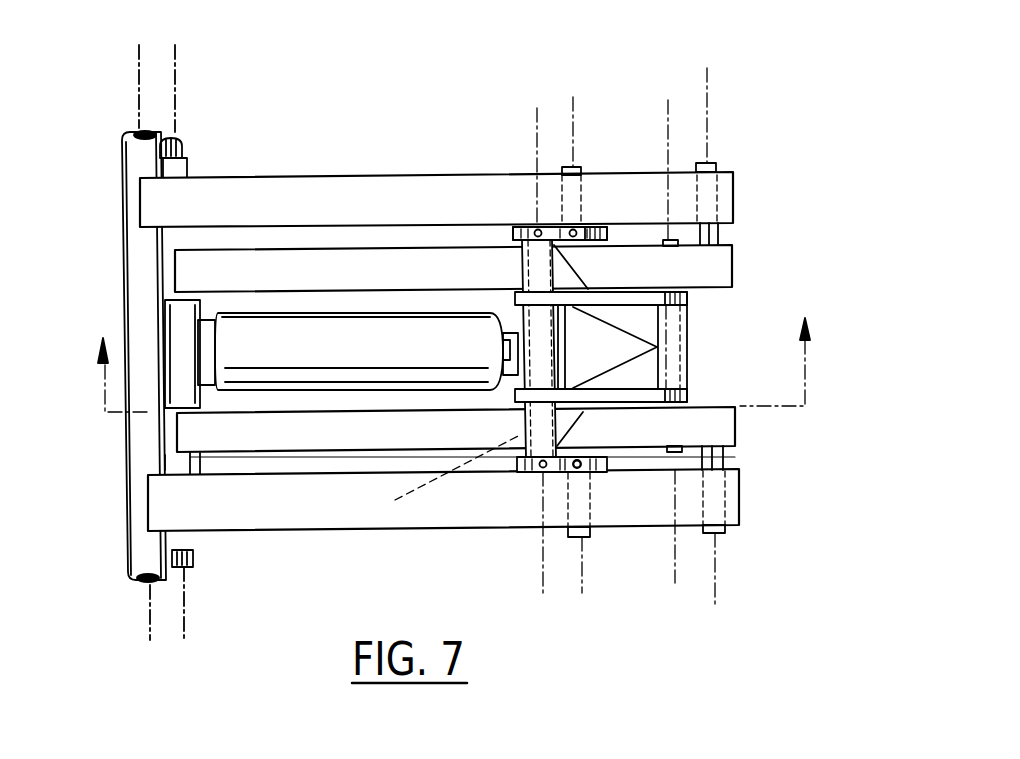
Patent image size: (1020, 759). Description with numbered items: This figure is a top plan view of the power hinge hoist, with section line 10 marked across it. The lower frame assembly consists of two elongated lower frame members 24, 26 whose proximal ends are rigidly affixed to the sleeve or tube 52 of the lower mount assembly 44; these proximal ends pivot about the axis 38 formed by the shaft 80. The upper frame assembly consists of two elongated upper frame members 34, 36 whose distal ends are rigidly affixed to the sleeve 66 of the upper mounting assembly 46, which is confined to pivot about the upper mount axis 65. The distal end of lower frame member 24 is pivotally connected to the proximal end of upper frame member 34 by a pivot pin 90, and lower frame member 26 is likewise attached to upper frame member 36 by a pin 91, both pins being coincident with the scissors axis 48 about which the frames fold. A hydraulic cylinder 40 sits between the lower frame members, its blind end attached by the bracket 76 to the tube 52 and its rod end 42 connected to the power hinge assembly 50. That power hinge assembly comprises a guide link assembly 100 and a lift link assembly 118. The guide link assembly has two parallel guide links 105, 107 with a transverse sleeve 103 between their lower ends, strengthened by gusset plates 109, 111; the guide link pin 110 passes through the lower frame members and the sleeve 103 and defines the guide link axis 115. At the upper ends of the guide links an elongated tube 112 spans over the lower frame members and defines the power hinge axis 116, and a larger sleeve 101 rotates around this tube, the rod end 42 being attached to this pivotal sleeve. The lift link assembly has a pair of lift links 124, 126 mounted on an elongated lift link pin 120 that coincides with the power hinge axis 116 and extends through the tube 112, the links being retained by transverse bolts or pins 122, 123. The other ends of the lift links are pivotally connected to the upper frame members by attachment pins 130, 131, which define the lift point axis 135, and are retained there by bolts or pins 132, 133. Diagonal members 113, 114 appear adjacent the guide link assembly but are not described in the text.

The section line 10 is at (454, 353).
The lower frame member 24 is at (258, 455).
The lower frame member 26 is at (277, 248).
The upper frame member 34 is at (308, 531).
The upper frame member 36 is at (271, 177).
The axis 38 is at (175, 78).
The hydraulic cylinder 40 is at (328, 316).
The rod end 42 is at (487, 332).
The lower mount assembly 44 is at (167, 465).
The upper mounting assembly 46 is at (123, 247).
The scissors axis 48 is at (708, 113).
The power hinge assembly 50 is at (689, 347).
The sleeve or tube 52 is at (190, 164).
The upper mount axis 65 is at (139, 75).
The sleeve 66 is at (123, 438).
The bracket 76 is at (165, 317).
The shaft 80 is at (182, 137).
The pivot pin 90 is at (720, 534).
The pin 91 is at (710, 163).
The guide link assembly 100 is at (689, 367).
The sleeve 101 is at (517, 325).
The transverse sleeve 103 is at (688, 328).
The guide link 105 is at (505, 402).
The guide link 107 is at (673, 270).
The gusset plate 109 is at (688, 382).
The guide link pin 110 is at (678, 240).
The gusset plate 111 is at (688, 315).
The elongated tube 112 is at (517, 260).
The brace 113 is at (585, 414).
The brace 114 is at (574, 272).
The guide link axis 115 is at (668, 100).
The power hinge axis 116 is at (537, 108).
The lift link assembly 118 is at (518, 278).
The lift link pin 120 is at (430, 476).
The bolt or pin 122 is at (535, 470).
The bolt or pin 123 is at (538, 228).
The lift link 124 is at (520, 463).
The lift link 126 is at (517, 226).
The attachment pin 130 is at (587, 537).
The attachment pin 131 is at (582, 166).
The bolt or pin 132 is at (580, 468).
The bolt or pin 133 is at (590, 228).
The lift point axis 135 is at (573, 97).